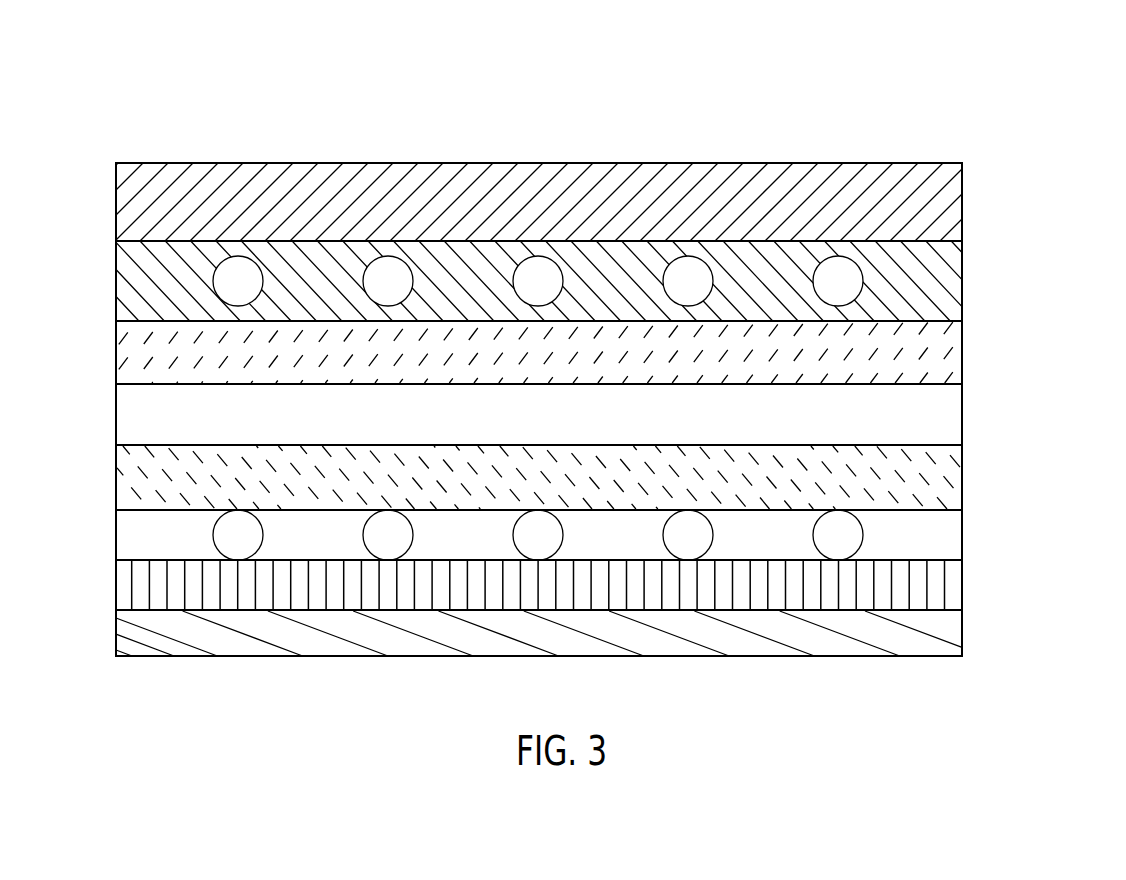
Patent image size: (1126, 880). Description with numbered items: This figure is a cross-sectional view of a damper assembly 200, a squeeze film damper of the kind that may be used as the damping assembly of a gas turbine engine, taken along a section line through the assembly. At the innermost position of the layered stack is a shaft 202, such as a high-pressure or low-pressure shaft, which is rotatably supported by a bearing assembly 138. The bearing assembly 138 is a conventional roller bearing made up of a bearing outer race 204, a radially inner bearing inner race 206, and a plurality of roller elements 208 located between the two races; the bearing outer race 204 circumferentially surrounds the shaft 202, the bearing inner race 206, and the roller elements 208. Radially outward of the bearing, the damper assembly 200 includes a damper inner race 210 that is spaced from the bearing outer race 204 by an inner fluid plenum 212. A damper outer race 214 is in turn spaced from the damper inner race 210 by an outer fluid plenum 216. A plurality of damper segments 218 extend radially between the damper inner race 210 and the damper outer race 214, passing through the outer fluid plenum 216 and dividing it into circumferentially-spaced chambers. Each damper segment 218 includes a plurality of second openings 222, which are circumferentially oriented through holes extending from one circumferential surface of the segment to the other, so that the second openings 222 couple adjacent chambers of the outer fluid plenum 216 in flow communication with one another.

The damper assembly 200 is at (163, 95).
The bearing assembly 138 is at (1038, 456).
The shaft 202 is at (932, 635).
The bearing outer race 204 is at (932, 483).
The bearing inner race 206 is at (932, 587).
The roller elements 208 is at (932, 538).
The damper inner race 210 is at (932, 358).
The inner fluid plenum 212 is at (932, 425).
The damper outer race 214 is at (932, 205).
The outer fluid plenum 216 is at (832, 283).
The damper segments 218 is at (932, 285).
The second openings 222 is at (839, 254).